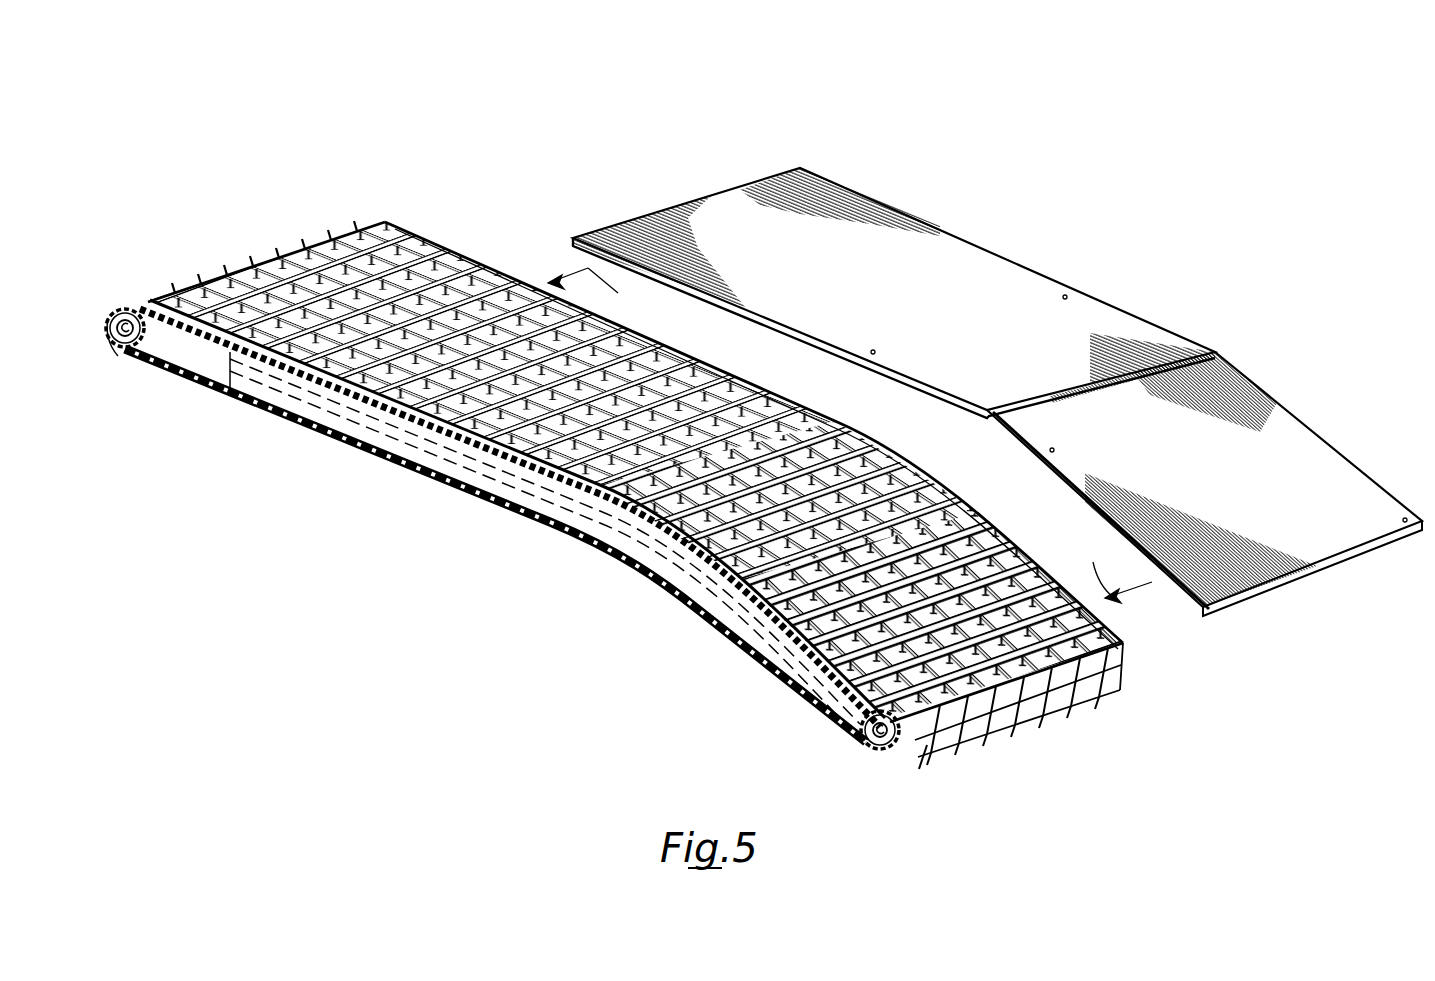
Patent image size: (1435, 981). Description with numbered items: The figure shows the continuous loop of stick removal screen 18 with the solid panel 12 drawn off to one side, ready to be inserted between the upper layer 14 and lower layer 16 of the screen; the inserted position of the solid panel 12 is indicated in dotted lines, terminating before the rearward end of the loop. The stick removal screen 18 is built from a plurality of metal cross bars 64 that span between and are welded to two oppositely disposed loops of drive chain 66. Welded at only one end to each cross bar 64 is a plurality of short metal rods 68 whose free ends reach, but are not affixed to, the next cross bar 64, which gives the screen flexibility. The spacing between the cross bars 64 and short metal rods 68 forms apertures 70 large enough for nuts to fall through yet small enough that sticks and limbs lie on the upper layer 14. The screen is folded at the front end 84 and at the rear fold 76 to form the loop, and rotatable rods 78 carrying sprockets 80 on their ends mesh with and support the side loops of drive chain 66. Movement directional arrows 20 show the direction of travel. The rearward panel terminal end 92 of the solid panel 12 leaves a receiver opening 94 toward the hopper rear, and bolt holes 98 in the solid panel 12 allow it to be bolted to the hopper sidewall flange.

The solid panel 12 is at (955, 290).
The upper layer 14 is at (350, 423).
The lower layer 16 is at (280, 427).
The stick removal screen 18 is at (677, 590).
The movement directional arrows 20 is at (850, 435).
The cross bars 64 is at (450, 292).
The drive chain 66 is at (400, 236).
The short metal rods 68 is at (290, 248).
The apertures 70 is at (773, 620).
The rear fold 76 is at (198, 268).
The rotatable rods 78 is at (118, 345).
The sprockets 80 is at (133, 357).
The front end 84 is at (1125, 690).
The panel terminal end 92 is at (727, 195).
The receiver opening 94 is at (193, 347).
The bolt holes 98 is at (610, 240).